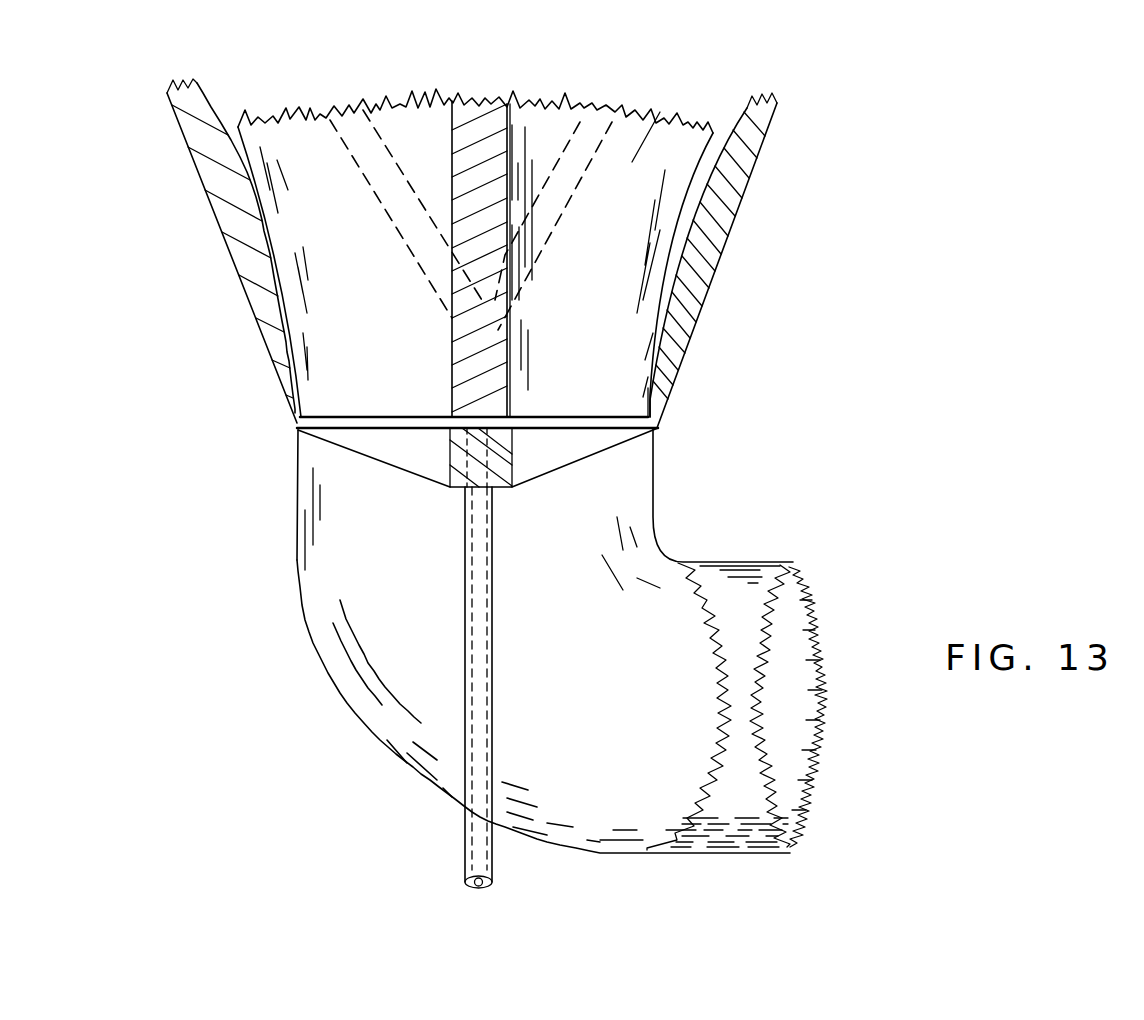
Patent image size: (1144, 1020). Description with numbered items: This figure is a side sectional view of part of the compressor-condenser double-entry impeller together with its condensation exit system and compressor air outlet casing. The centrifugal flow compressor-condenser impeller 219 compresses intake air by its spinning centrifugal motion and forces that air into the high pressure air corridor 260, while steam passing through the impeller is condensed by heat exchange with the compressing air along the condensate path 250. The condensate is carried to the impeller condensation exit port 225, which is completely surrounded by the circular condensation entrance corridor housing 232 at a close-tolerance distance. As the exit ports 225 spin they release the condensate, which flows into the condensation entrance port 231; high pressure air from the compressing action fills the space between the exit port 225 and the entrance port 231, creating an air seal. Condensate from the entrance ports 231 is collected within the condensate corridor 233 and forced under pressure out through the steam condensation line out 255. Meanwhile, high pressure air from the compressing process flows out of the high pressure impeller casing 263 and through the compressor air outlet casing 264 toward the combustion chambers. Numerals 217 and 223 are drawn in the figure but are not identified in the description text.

The sheet 217 is at (508, 183).
The centrifugal flow compressor-condenser impeller 219 is at (630, 160).
The outer layer 223 is at (760, 162).
The impeller condensation exit port 225 is at (483, 417).
The condensation entrance port 231 is at (513, 421).
The condensation entrance corridor housing 232 is at (512, 457).
The condensate corridor 233 is at (512, 463).
The condensate path 250 is at (580, 153).
The steam condensation line out 255 is at (463, 852).
The high pressure air corridor 260 is at (407, 604).
The high pressure impeller casing 263 is at (543, 475).
The compressor air outlet casing 264 is at (297, 583).